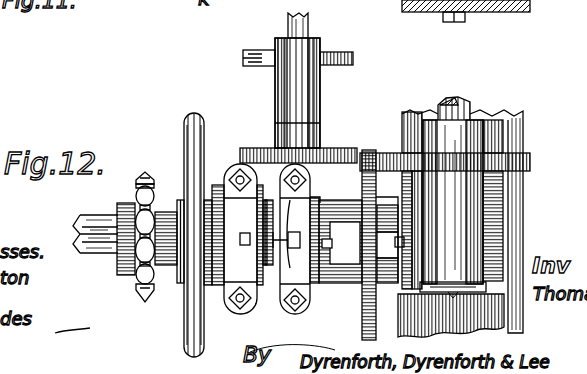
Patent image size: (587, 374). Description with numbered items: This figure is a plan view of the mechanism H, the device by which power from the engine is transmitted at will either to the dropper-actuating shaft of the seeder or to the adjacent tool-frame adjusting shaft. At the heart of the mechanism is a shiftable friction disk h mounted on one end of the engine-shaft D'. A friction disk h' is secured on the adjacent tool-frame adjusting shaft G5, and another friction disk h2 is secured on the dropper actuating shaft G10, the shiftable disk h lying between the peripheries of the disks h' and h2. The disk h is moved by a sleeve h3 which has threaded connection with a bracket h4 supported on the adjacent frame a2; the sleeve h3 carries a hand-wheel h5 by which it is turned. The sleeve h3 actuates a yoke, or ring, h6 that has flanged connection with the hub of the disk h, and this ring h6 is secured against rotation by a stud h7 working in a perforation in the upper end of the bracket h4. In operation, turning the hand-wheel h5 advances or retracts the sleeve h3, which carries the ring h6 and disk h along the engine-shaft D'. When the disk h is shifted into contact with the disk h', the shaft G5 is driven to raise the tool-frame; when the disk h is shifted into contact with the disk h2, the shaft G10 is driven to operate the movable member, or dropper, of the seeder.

The engine-shaft D' is at (81, 221).
The sleeve h3 is at (151, 292).
The hand-wheel h5 is at (188, 130).
The stud h7 is at (246, 232).
The yoke, or ring h6 is at (299, 239).
The friction disk h2 is at (255, 138).
The dropper actuating shaft G10 is at (308, 31).
The mechanism H is at (359, 102).
The shiftable friction disk h is at (338, 269).
The bracket h4 is at (403, 258).
The friction disk h' is at (466, 154).
The frame a2 is at (525, 216).
The tool-frame adjusting shaft G5 is at (462, 96).